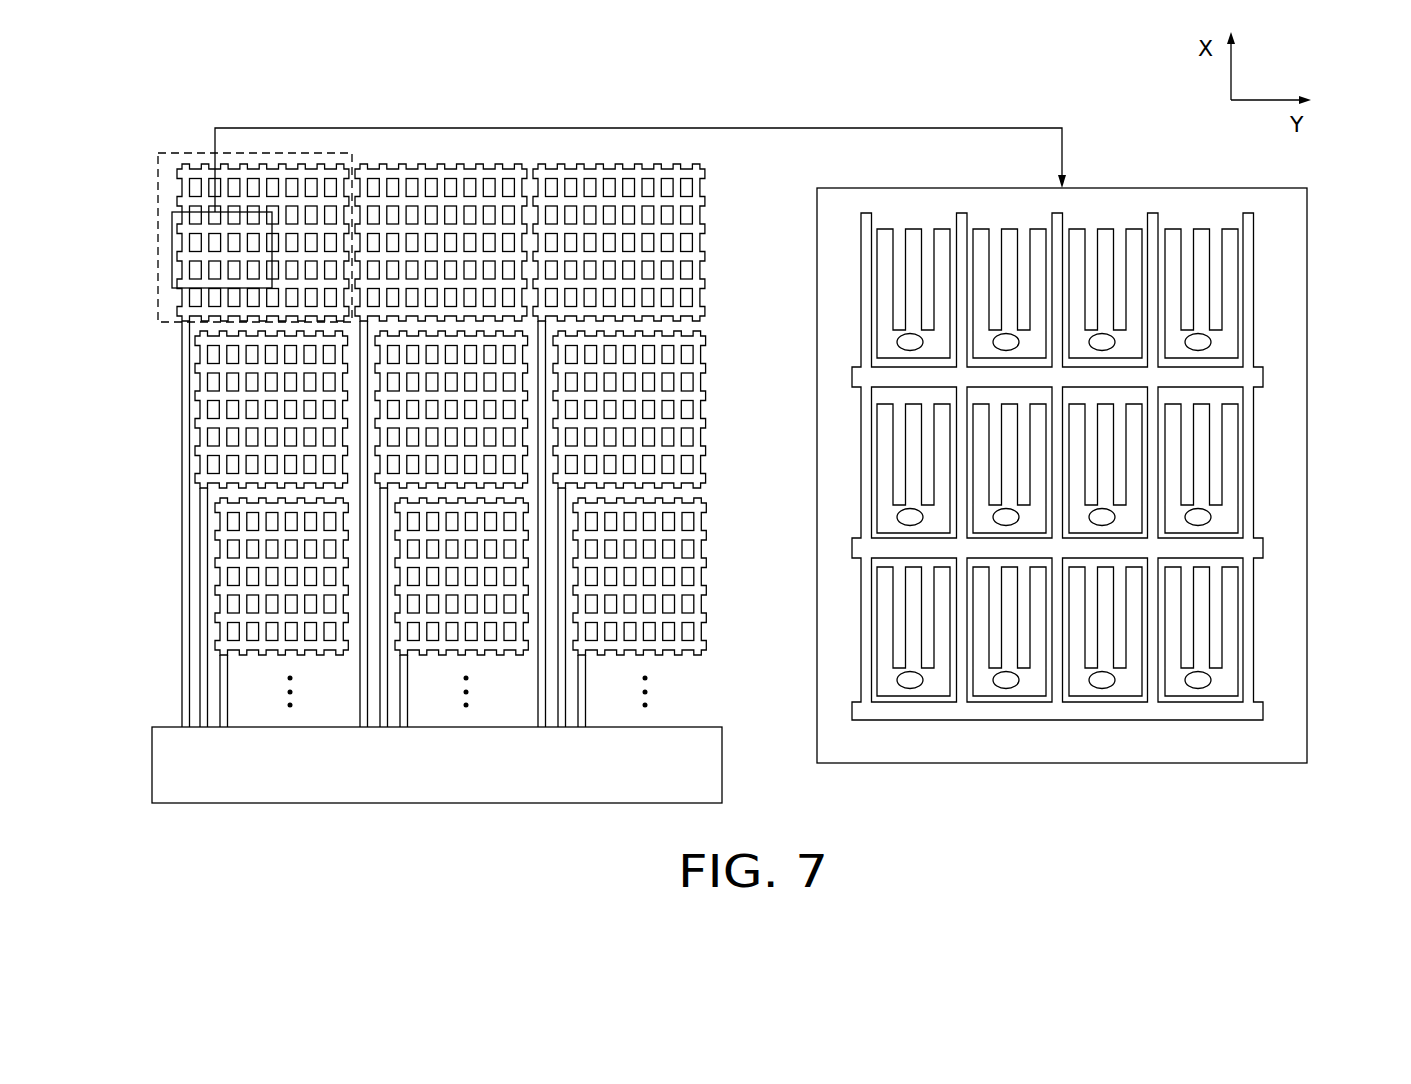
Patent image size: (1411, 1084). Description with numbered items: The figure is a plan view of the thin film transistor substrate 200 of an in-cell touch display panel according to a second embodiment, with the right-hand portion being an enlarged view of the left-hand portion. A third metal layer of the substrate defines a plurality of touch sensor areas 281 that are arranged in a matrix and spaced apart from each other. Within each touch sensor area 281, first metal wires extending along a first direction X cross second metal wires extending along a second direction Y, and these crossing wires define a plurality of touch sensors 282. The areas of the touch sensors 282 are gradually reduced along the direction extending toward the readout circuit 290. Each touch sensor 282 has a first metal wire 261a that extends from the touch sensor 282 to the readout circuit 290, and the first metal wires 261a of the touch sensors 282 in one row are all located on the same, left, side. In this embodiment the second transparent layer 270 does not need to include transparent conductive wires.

The thin film transistor substrate 200 is at (615, 90).
The first metal wire 261a is at (191, 421).
The second transparent layer 270 is at (1228, 603).
The touch sensor area 281 is at (158, 242).
The touch sensor 282 is at (442, 154).
The readout circuit 290 is at (170, 727).